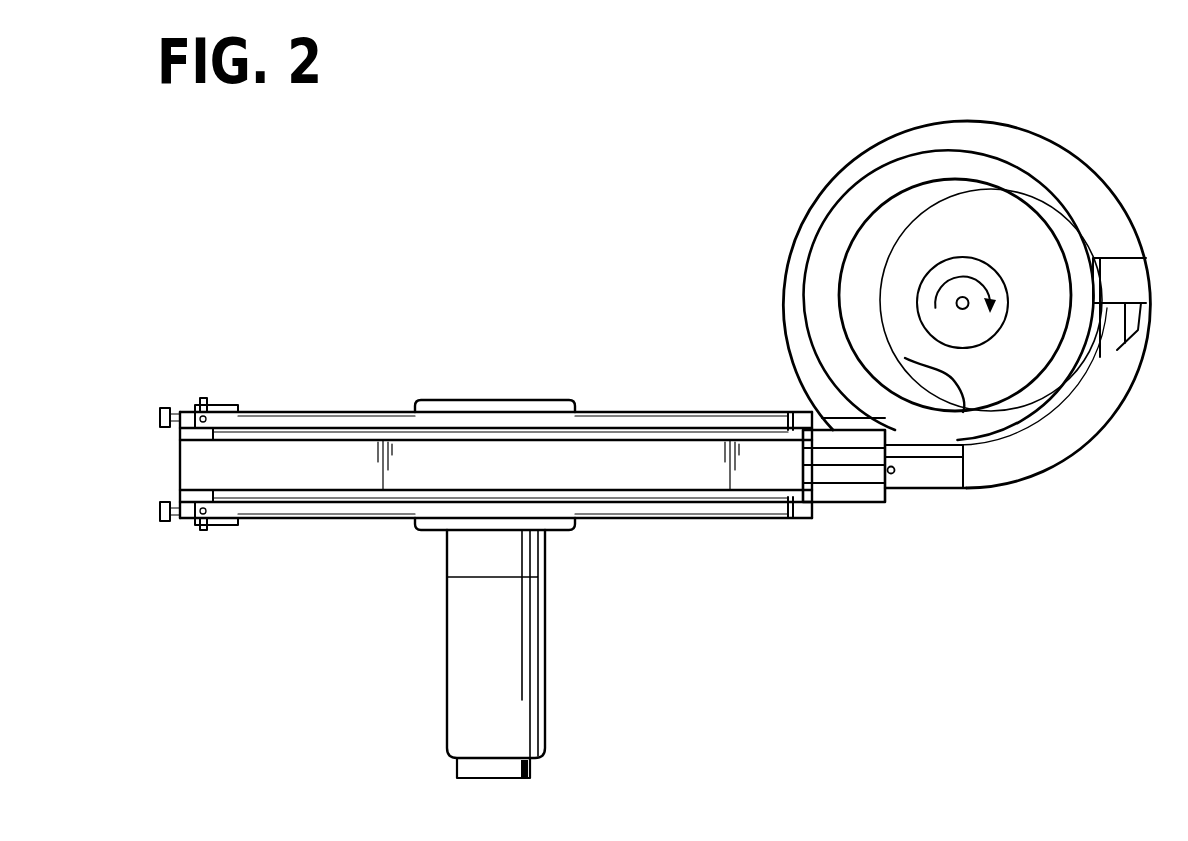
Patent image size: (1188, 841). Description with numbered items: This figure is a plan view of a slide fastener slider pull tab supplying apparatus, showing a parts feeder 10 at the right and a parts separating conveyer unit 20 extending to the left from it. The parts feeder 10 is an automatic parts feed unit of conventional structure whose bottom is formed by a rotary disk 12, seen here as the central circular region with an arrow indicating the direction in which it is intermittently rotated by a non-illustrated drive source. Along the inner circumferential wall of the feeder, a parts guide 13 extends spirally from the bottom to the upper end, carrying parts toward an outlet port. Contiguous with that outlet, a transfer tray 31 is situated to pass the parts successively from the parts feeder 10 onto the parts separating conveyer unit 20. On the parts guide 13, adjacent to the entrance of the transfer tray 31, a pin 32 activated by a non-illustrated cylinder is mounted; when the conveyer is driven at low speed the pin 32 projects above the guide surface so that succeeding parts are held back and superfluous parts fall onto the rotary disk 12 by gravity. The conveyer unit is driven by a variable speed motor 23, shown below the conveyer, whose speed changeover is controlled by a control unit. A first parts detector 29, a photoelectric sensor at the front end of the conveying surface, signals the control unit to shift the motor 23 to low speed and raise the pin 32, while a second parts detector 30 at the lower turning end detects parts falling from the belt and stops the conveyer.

The parts feeder 10 is at (824, 138).
The rotary disk 12 is at (1027, 252).
The parts guide 13 is at (957, 185).
The parts separating conveyer unit 20 is at (573, 362).
The variable speed motor 23 is at (527, 667).
The first parts detector 29 is at (205, 400).
The second parts detector 30 is at (158, 414).
The transfer tray 31 is at (855, 503).
The pin 32 is at (893, 474).